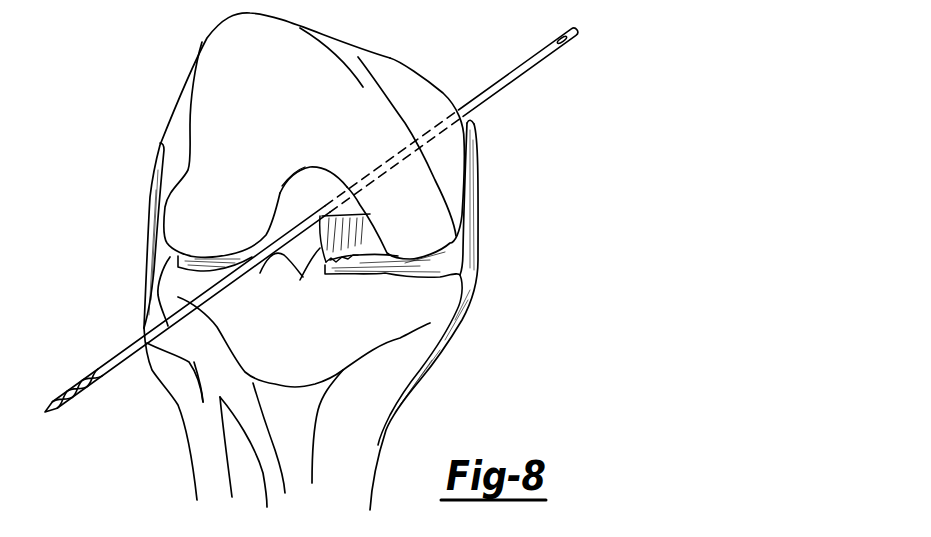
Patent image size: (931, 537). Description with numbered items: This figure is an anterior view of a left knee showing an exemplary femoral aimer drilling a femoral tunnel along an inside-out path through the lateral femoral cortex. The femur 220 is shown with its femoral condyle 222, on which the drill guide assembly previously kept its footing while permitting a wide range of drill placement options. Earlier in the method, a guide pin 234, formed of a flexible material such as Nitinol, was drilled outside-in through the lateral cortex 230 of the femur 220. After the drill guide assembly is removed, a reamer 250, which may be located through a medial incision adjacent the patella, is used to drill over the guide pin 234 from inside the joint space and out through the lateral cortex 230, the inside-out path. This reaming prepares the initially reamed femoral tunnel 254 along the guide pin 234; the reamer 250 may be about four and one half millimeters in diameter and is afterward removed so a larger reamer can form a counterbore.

The femur 220 is at (228, 66).
The femoral condyle 222 is at (432, 225).
The lateral cortex 230 is at (405, 81).
The guide pin 234 is at (118, 352).
The reamer 250 is at (273, 247).
The femoral tunnel 254 is at (425, 142).